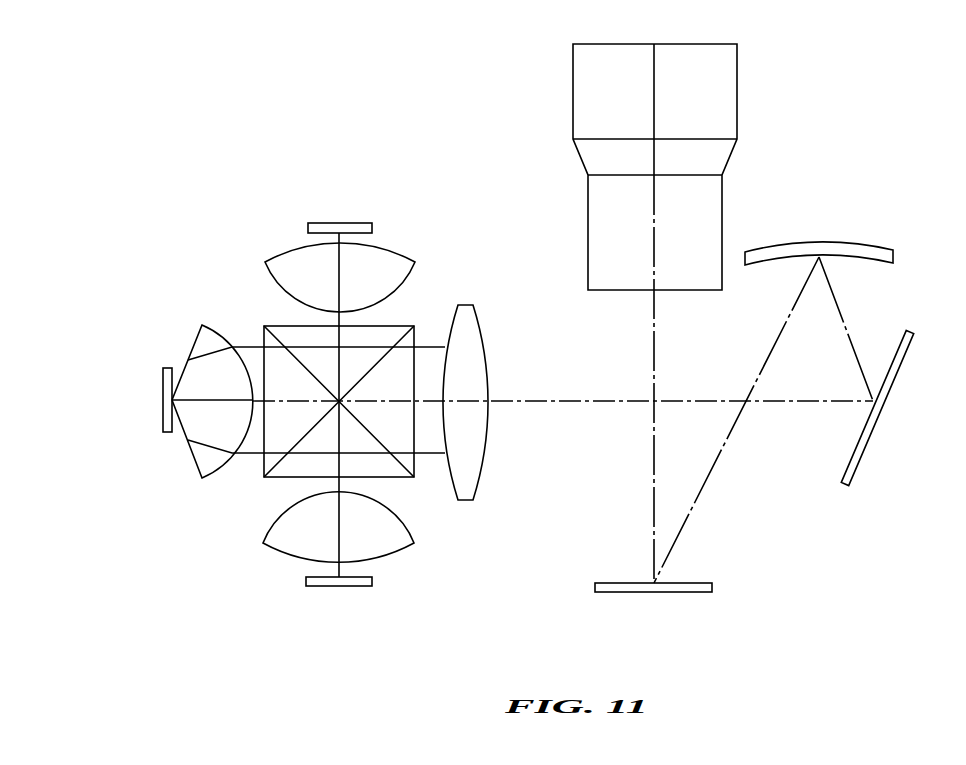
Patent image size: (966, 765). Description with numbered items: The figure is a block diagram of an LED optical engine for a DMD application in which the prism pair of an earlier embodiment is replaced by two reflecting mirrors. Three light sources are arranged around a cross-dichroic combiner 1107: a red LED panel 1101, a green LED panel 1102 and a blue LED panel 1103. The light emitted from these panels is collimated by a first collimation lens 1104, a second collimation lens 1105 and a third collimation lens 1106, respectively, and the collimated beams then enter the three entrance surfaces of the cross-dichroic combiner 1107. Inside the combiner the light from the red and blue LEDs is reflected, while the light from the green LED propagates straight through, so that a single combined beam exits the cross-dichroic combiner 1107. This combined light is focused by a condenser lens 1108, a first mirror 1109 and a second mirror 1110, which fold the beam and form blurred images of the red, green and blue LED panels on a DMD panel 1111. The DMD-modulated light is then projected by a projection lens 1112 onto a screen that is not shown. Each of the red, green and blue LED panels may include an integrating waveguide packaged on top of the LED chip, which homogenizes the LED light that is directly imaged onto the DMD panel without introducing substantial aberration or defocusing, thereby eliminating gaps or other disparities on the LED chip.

The red LED panel 1101 is at (322, 222).
The green LED panel 1102 is at (162, 418).
The blue LED panel 1103 is at (350, 586).
The first collimation lens 1104 is at (281, 258).
The second collimation lens 1105 is at (202, 338).
The third collimation lens 1106 is at (275, 530).
The cross-dichroic combiner 1107 is at (372, 333).
The condenser lens 1108 is at (480, 321).
The first mirror 1109 is at (865, 450).
The second mirror 1110 is at (865, 243).
The DMD panel 1111 is at (612, 583).
The projection lens 1112 is at (572, 85).